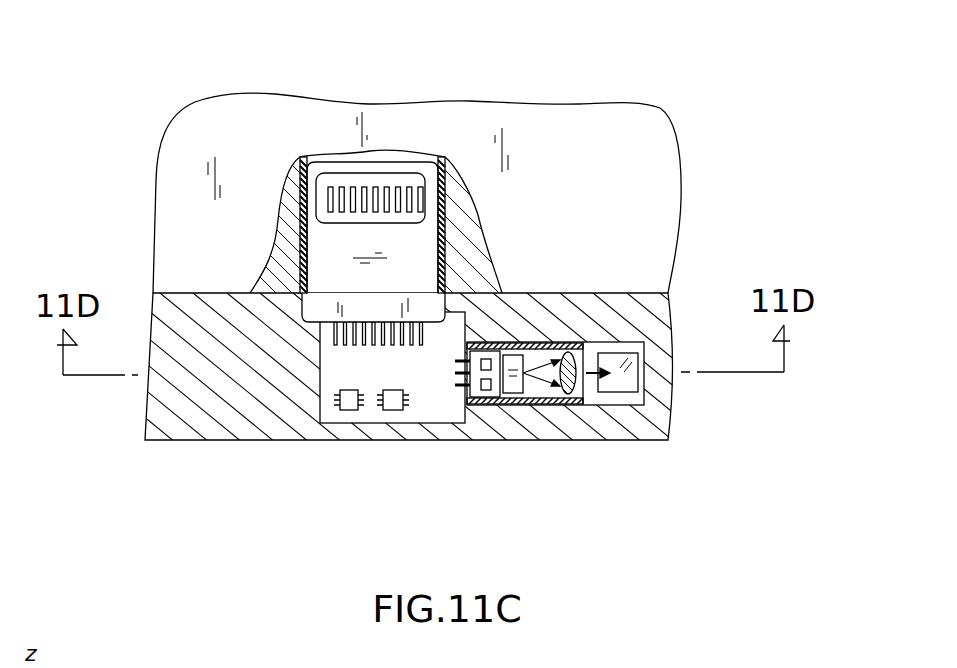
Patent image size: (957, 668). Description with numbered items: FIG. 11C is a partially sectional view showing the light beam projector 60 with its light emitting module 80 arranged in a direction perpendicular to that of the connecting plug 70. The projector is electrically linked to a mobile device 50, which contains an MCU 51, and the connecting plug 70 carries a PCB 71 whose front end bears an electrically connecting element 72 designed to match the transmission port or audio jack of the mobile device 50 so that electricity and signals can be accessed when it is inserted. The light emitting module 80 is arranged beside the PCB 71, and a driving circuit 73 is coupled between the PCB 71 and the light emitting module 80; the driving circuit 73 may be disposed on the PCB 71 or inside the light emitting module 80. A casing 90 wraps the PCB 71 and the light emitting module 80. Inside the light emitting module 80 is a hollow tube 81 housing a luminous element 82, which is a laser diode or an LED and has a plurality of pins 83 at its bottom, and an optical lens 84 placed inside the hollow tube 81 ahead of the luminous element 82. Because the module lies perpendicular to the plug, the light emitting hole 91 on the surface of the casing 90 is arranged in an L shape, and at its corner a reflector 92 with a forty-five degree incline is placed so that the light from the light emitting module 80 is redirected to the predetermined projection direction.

The mobile device 50 is at (161, 170).
The MCU 51 is at (308, 281).
The light beam projector 60 is at (228, 452).
The connecting plug 70 is at (743, 139).
The PCB 71 is at (417, 340).
The electrically connecting element 72 is at (410, 237).
The driving circuit 73 is at (393, 402).
The light emitting module 80 is at (450, 508).
The hollow tube 81 is at (532, 404).
The luminous element 82 is at (493, 388).
The pins 83 is at (456, 388).
The optical lens 84 is at (565, 404).
The casing 90 is at (662, 393).
The light emitting hole 91 is at (590, 390).
The reflector 92 is at (623, 387).